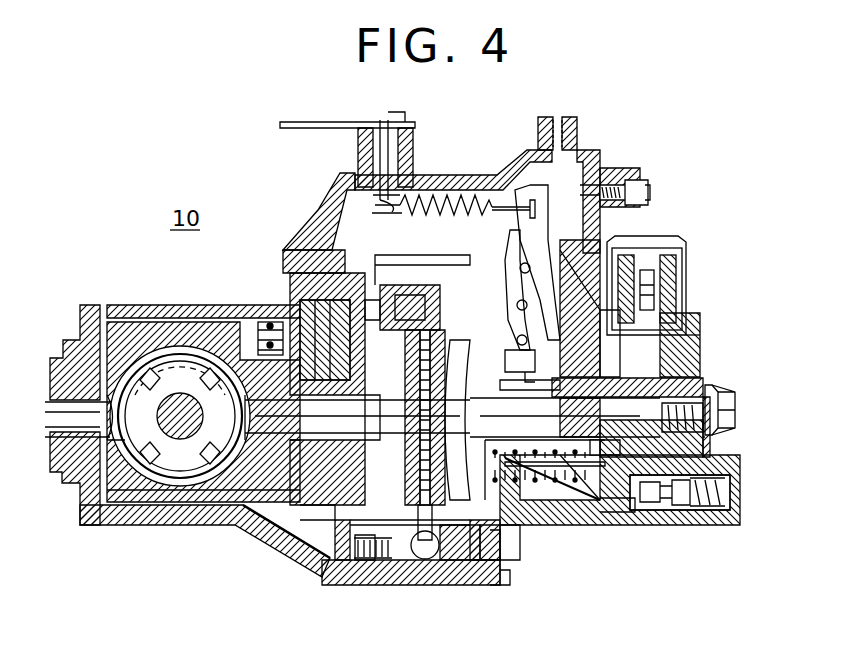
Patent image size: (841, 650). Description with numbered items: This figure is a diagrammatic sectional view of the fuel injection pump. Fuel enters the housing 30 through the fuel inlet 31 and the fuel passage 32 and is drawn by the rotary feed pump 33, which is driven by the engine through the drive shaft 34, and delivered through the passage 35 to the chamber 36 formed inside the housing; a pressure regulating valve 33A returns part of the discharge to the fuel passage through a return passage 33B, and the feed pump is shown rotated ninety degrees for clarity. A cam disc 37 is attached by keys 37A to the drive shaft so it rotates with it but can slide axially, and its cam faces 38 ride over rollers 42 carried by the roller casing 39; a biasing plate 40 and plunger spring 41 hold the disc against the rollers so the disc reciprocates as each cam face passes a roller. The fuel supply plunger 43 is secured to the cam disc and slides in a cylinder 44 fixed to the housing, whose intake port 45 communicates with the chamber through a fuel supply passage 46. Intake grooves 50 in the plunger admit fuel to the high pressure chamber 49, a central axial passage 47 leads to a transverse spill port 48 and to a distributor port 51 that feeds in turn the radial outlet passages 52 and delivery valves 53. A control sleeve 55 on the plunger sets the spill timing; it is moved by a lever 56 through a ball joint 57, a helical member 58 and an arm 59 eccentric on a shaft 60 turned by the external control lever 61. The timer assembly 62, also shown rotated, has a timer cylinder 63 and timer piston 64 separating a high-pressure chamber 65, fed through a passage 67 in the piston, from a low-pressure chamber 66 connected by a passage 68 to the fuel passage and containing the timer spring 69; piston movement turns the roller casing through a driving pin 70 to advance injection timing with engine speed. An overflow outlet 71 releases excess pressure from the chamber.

The housing 30 is at (300, 250).
The fuel inlet 31 is at (104, 318).
The fuel passage 32 is at (112, 510).
The rotary feed pump 33 is at (150, 500).
The pressure regulating valve 33A is at (262, 340).
The return passage 33B is at (170, 318).
The drive shaft 34 is at (192, 412).
The passage 35 is at (292, 310).
The chamber 36 is at (460, 245).
The cam disc 37 is at (478, 540).
The keys 37A is at (430, 405).
The cam faces 38 is at (425, 560).
The roller casing 39 is at (352, 386).
The biasing plate 40 is at (535, 527).
The plunger spring 41 is at (568, 480).
The rollers 42 is at (318, 540).
The fuel supply plunger 43 is at (725, 460).
The cylinder 44 is at (670, 340).
The intake port 45 is at (650, 370).
The fuel supply passage 46 is at (575, 282).
The central axial passage 47 is at (690, 445).
The spill port 48 is at (510, 425).
The high pressure chamber 49 is at (690, 403).
The intake grooves 50 is at (665, 390).
The distributor port 51 is at (610, 480).
The radial outlet passages 52 is at (600, 470).
The delivery valves 53 is at (650, 500).
The control sleeve 55 is at (520, 385).
The lever 56 is at (565, 275).
The ball joint 57 is at (580, 500).
The helical member 58 is at (487, 200).
The arm 59 is at (422, 178).
The shaft 60 is at (385, 156).
The control lever 61 is at (340, 122).
The timer assembly 62 is at (357, 590).
The timer cylinder 63 is at (505, 580).
The timer piston 64 is at (518, 550).
The high-pressure chamber 65 is at (510, 578).
The low-pressure chamber 66 is at (360, 560).
The passage 67 is at (500, 575).
The passage 68 is at (262, 530).
The timer spring 69 is at (392, 566).
The driving pin 70 is at (455, 562).
The overflow outlet 71 is at (578, 150).